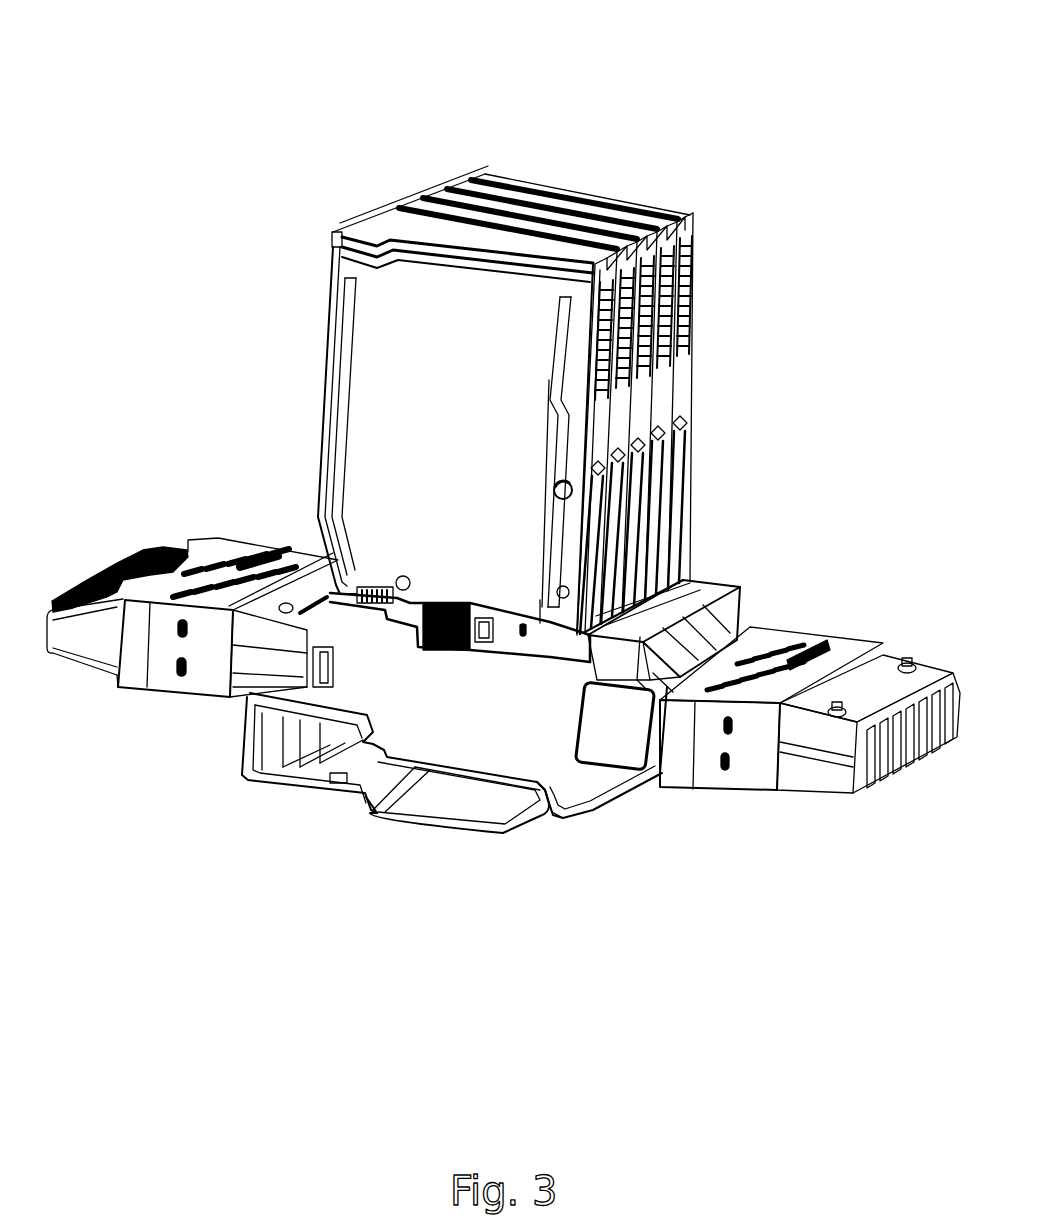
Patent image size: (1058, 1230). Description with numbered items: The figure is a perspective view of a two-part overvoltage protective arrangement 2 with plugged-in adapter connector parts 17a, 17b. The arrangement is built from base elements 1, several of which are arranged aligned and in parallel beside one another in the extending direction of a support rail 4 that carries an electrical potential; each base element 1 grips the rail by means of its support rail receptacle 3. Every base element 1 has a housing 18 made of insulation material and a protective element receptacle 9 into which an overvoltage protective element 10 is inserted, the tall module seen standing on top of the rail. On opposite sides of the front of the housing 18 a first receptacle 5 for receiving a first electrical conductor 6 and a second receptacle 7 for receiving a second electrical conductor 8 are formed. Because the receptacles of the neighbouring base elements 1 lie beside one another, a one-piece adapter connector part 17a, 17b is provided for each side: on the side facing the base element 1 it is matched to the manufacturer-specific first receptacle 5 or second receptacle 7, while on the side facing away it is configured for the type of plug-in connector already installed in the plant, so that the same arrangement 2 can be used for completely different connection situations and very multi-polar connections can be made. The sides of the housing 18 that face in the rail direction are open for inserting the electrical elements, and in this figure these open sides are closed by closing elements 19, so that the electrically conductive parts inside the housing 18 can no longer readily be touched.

The overvoltage protective arrangement 2 is at (232, 77).
The overvoltage protective element 10 is at (407, 353).
The protective element receptacle 9 is at (521, 602).
The housing 18 is at (693, 582).
The adapter connector part 17b is at (165, 630).
The adapter connector part 17a is at (753, 760).
The second receptacle 7 is at (205, 810).
The second electrical conductor 8 is at (233, 706).
The base element 1 is at (577, 790).
The closing element 19 is at (425, 722).
The support rail 4 is at (440, 810).
The support rail receptacle 3 is at (539, 819).
The first receptacle 5 is at (701, 817).
The first electrical conductor 6 is at (665, 795).